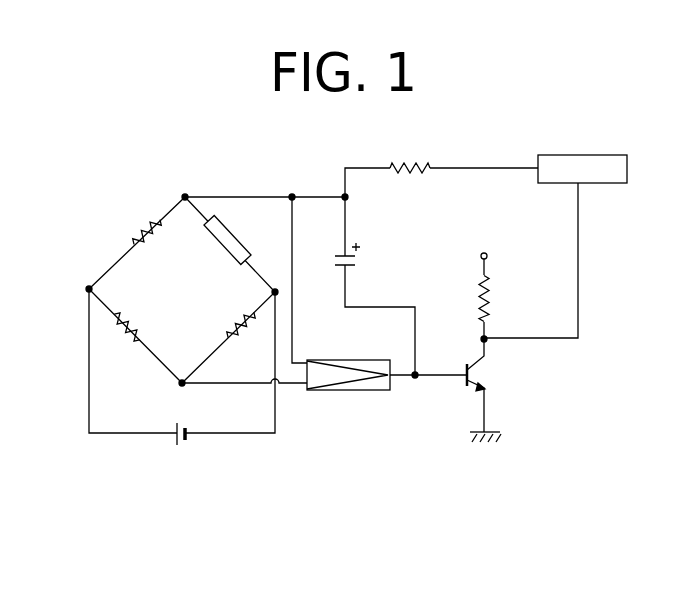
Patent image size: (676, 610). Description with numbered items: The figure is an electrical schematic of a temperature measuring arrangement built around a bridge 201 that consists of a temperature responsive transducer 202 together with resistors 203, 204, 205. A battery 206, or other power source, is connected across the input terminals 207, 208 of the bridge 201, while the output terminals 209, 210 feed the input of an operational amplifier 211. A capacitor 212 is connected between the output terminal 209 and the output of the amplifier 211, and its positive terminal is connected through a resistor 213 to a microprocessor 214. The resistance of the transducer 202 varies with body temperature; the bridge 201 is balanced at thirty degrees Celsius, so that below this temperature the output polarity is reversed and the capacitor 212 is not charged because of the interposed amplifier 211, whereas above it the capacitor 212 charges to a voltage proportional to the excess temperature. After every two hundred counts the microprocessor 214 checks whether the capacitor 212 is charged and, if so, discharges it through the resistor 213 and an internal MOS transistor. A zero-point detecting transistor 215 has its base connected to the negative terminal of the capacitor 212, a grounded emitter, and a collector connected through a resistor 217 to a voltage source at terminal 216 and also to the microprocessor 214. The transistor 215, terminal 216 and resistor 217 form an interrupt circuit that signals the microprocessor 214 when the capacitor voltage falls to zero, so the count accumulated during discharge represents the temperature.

The bridge 201 is at (107, 271).
The temperature responsive transducer 202 is at (236, 242).
The resistor 203 is at (243, 340).
The resistor 204 is at (136, 330).
The resistor 205 is at (138, 228).
The battery 206 is at (178, 450).
The input terminal 207 is at (82, 295).
The input terminal 208 is at (272, 291).
The output terminal 209 is at (185, 195).
The output terminal 210 is at (178, 388).
The operational amplifier 211 is at (347, 392).
The capacitor 212 is at (357, 258).
The resistor 213 is at (397, 163).
The microprocessor 214 is at (572, 155).
The transistor 215 is at (463, 381).
The voltage source terminal 216 is at (488, 257).
The resistor 217 is at (489, 296).